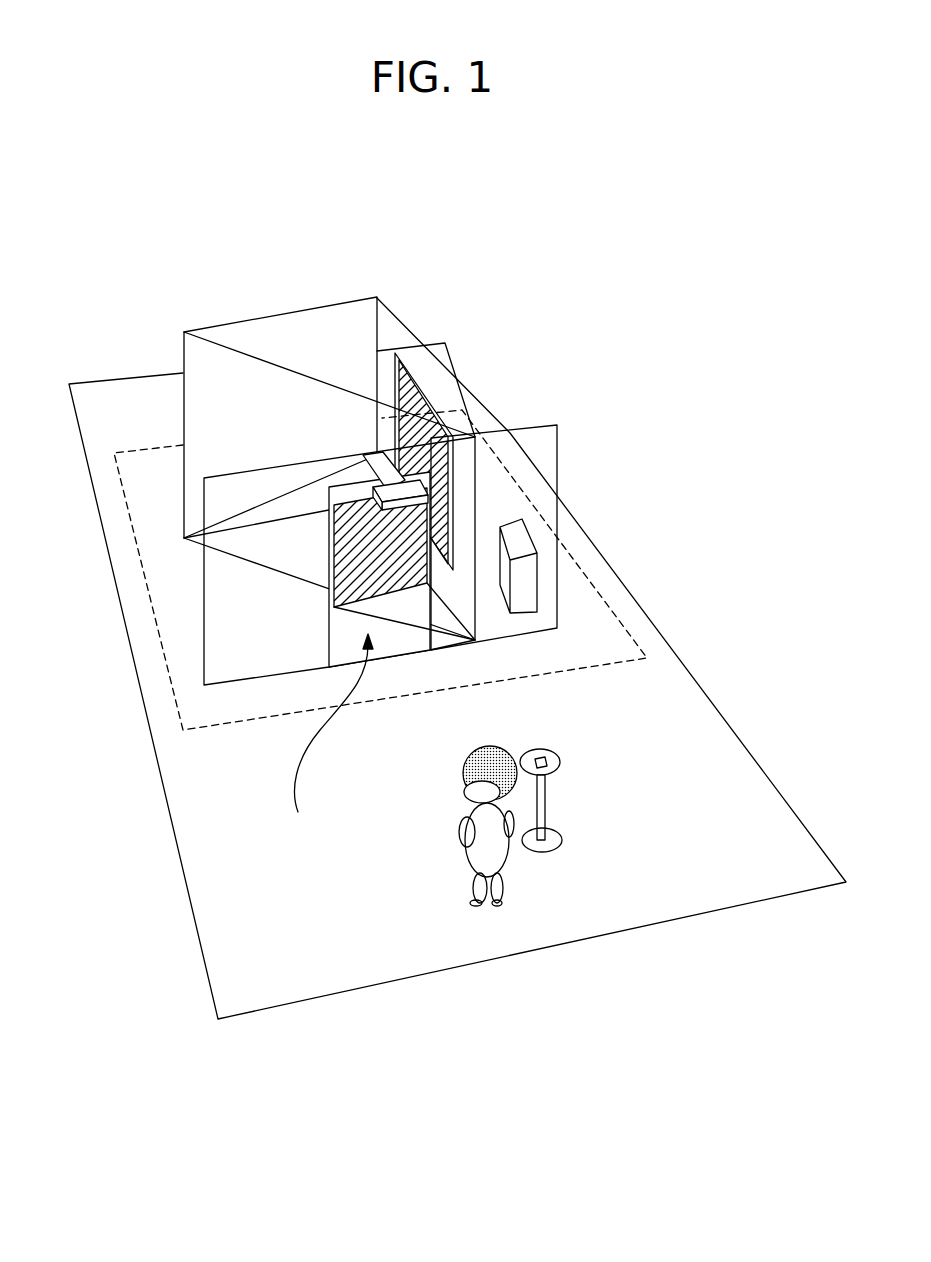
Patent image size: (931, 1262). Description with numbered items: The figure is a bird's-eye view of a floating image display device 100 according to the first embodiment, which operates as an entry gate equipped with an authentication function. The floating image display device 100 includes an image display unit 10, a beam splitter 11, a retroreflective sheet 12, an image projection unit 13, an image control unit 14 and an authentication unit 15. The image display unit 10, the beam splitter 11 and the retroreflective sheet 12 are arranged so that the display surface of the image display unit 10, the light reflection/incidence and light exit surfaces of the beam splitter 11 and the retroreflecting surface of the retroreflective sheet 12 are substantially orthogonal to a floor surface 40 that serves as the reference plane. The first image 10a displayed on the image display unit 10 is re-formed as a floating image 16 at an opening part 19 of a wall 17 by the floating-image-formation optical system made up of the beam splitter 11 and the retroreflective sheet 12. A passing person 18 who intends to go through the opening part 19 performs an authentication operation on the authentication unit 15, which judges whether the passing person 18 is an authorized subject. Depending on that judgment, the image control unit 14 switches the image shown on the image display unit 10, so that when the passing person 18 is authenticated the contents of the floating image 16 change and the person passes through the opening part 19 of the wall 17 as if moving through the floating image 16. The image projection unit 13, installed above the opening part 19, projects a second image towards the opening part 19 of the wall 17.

The image display unit 10 is at (400, 345).
The image (first image) 10a is at (413, 360).
The beam splitter 11 is at (200, 400).
The retroreflective sheet 12 is at (305, 343).
The image projection unit 13 is at (372, 483).
The image control unit 14 is at (523, 585).
The authentication unit 15 is at (548, 766).
The floating image 16 is at (378, 555).
The wall 17 is at (226, 655).
The passing person 18 is at (493, 903).
The opening part 19 is at (329, 739).
The floor surface 40 is at (693, 749).
The floating image display device 100 is at (130, 522).